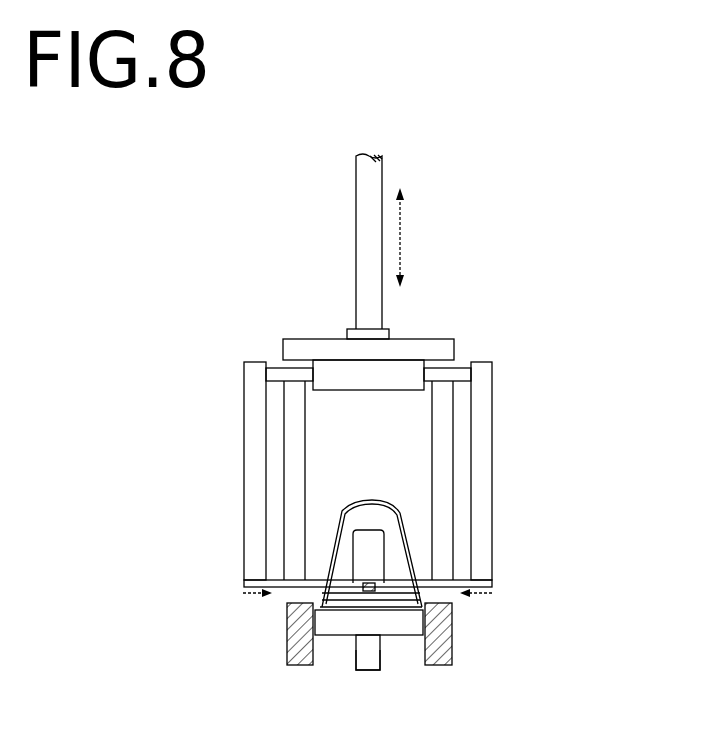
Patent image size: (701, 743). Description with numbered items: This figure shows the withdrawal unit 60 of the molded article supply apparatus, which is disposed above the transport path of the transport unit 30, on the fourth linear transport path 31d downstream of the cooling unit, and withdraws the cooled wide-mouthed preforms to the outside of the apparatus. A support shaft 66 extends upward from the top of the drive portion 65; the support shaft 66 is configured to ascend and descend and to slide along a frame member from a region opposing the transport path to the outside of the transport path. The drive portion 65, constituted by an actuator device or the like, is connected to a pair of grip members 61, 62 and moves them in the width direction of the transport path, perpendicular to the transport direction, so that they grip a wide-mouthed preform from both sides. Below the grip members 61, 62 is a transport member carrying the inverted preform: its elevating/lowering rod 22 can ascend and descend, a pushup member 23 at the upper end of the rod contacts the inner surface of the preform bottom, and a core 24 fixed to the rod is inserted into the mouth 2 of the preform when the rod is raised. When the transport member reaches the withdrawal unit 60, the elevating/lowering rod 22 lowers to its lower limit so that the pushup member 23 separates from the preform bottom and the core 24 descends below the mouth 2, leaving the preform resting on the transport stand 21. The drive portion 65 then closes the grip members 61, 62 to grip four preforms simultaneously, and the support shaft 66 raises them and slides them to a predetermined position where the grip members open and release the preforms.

The withdrawal unit 60 is at (558, 215).
The support shaft 66 is at (370, 212).
The drive portion 65 is at (411, 372).
The grip member 61 is at (490, 441).
The grip member 62 is at (252, 472).
The mouth 2 is at (310, 583).
The pushup member 23 is at (405, 530).
The core 24 is at (373, 550).
The transport stand 21 is at (456, 599).
The transport unit 30 is at (337, 658).
The elevating/lowering rod 22 is at (370, 642).
The fourth linear transport path 31d is at (387, 665).